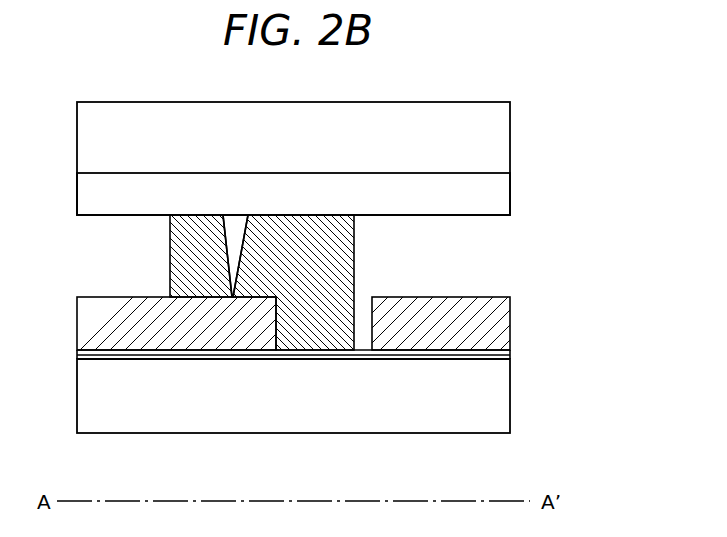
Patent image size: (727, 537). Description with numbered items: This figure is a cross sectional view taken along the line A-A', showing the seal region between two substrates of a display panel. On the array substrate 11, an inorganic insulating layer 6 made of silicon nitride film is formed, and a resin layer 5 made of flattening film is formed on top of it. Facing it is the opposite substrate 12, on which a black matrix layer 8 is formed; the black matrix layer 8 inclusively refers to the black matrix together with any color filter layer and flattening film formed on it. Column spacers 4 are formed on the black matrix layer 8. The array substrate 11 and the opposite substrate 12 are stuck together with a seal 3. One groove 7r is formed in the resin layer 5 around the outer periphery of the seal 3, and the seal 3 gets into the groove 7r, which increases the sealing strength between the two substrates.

The opposite substrate 12 is at (518, 102).
The black matrix layer 8 is at (88, 191).
The seal 3 is at (168, 266).
The column spacers 4 is at (238, 248).
The groove 7r is at (375, 362).
The resin layer 5 is at (485, 297).
The inorganic insulating layer 6 is at (432, 355).
The array substrate 11 is at (518, 297).